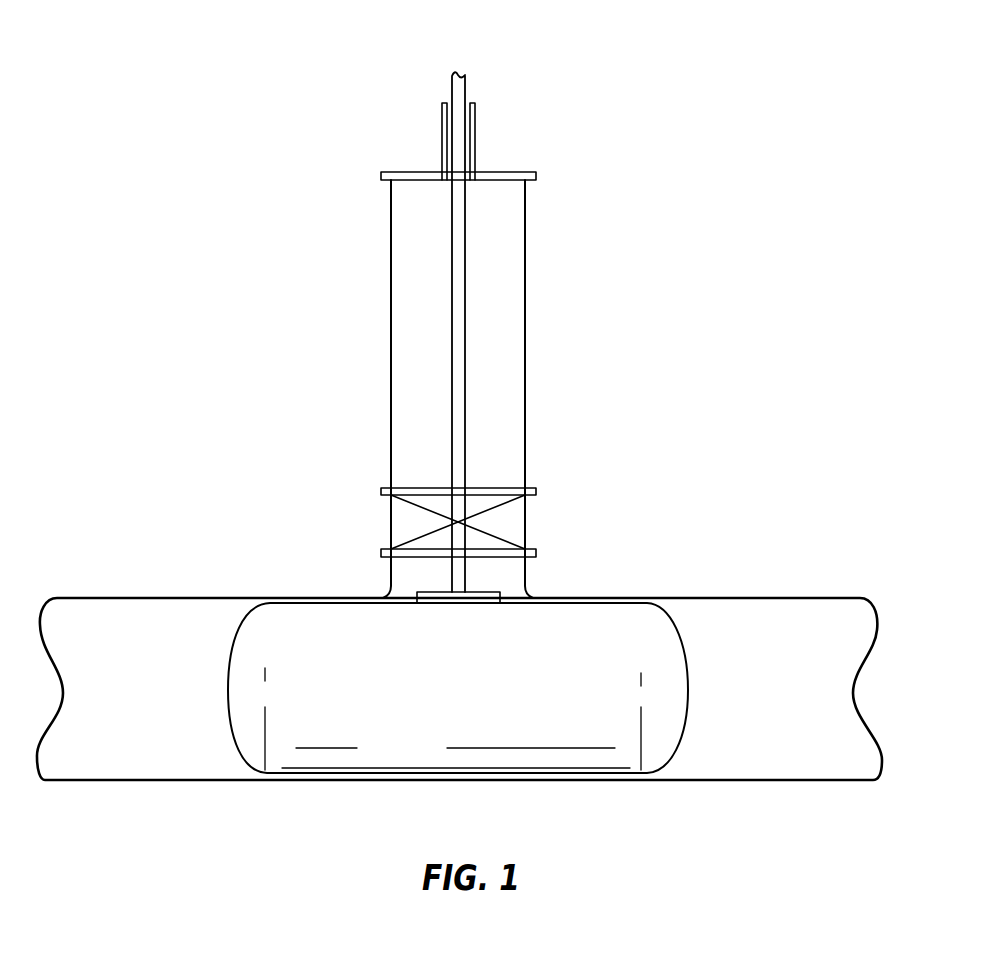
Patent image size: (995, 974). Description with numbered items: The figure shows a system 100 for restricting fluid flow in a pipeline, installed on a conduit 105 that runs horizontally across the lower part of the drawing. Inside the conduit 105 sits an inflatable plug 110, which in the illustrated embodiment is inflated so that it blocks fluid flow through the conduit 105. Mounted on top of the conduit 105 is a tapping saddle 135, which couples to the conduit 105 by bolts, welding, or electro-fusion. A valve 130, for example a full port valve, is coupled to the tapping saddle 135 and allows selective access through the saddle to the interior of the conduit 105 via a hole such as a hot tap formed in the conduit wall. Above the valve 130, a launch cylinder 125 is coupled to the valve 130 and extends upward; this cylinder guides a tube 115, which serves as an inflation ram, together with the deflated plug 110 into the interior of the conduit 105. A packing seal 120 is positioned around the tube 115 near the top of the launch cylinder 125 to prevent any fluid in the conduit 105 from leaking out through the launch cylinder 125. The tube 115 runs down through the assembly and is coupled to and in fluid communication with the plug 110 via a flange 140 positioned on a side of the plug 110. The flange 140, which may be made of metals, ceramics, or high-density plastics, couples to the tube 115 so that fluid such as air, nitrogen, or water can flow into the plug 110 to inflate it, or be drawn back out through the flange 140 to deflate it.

The system 100 is at (208, 301).
The conduit 105 is at (153, 597).
The inflatable plug 110 is at (307, 637).
The tube 115 is at (462, 93).
The packing seal 120 is at (476, 130).
The launch cylinder 125 is at (526, 332).
The valve 130 is at (527, 519).
The tapping saddle 135 is at (527, 578).
The flange 140 is at (448, 603).